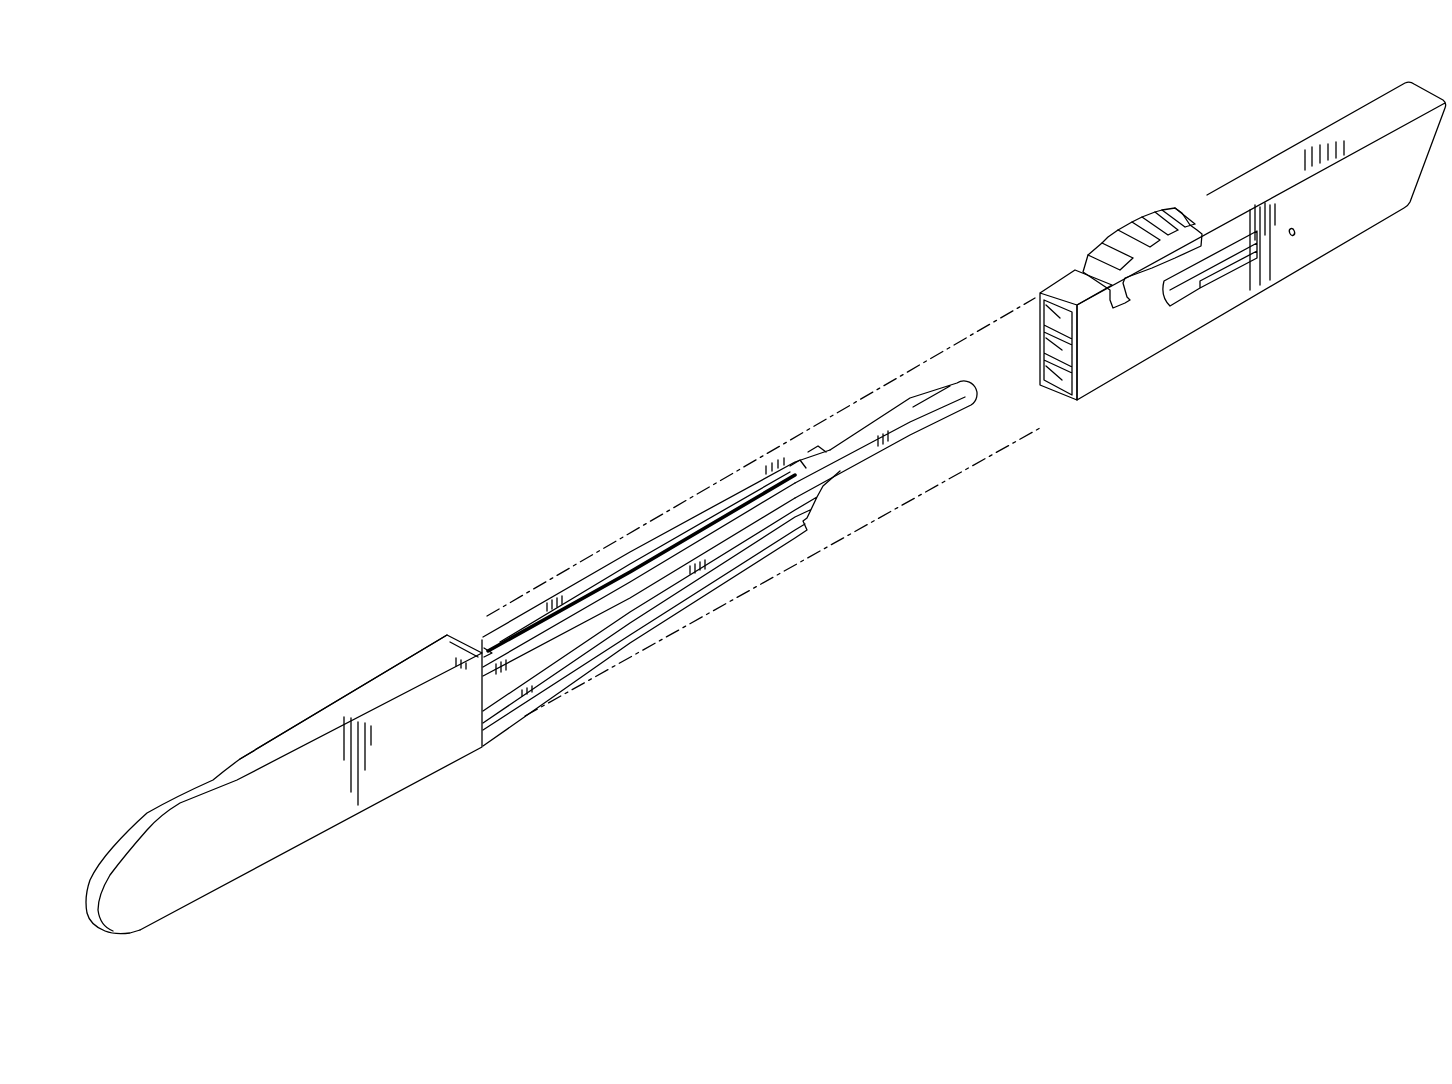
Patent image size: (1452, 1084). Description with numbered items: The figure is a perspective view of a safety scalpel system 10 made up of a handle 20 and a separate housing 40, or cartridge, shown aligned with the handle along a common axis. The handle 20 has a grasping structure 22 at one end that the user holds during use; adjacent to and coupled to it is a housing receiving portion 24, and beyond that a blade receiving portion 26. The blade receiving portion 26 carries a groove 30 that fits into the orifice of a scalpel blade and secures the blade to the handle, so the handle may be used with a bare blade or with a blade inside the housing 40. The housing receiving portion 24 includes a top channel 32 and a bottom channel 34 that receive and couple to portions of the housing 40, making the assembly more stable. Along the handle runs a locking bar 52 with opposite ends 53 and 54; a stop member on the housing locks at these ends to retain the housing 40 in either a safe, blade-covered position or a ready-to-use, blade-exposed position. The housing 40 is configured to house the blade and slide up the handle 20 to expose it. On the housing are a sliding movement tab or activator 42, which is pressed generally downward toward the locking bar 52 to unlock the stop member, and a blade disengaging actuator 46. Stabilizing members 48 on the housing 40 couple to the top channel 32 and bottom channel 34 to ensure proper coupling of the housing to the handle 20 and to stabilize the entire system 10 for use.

The safety scalpel system 10 is at (527, 382).
The handle 20 is at (435, 555).
The grasping structure 22 is at (300, 690).
The housing receiving portion 24 is at (723, 625).
The blade receiving portion 26 is at (868, 357).
The groove 30 is at (922, 393).
The top channel 32 is at (814, 447).
The bottom channel 34 is at (540, 664).
The housing 40 is at (1275, 137).
The activator 42 is at (1100, 222).
The blade disengaging actuator 46 is at (1190, 306).
The stabilizing members 48 is at (1075, 358).
The locking bar 52 is at (645, 548).
The end of locking bar 53 is at (795, 470).
The end of locking bar 54 is at (488, 650).